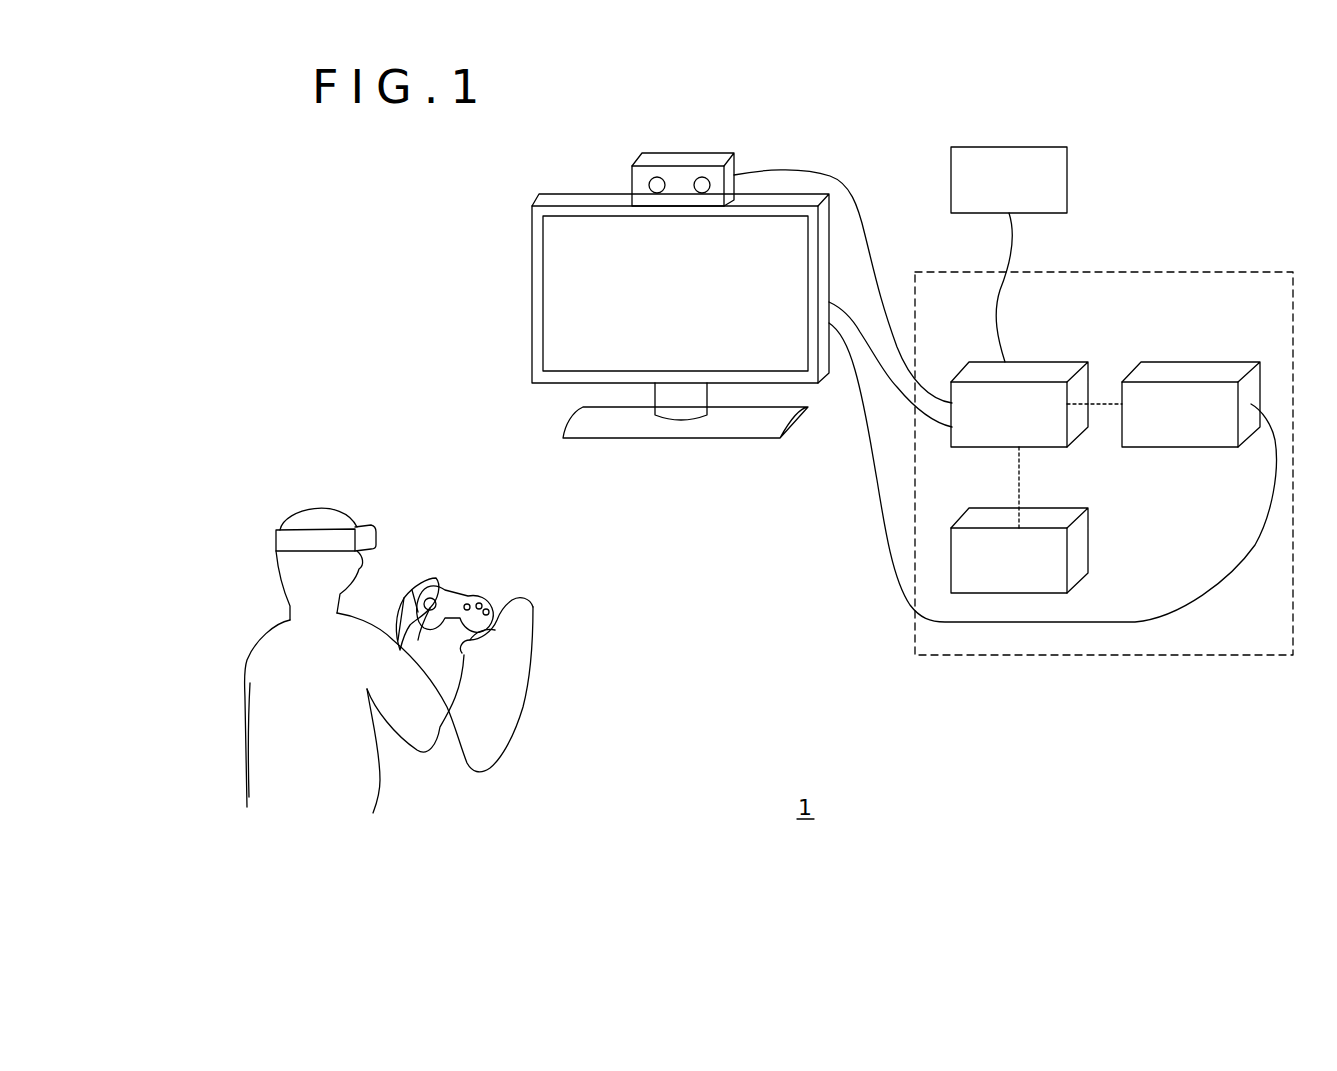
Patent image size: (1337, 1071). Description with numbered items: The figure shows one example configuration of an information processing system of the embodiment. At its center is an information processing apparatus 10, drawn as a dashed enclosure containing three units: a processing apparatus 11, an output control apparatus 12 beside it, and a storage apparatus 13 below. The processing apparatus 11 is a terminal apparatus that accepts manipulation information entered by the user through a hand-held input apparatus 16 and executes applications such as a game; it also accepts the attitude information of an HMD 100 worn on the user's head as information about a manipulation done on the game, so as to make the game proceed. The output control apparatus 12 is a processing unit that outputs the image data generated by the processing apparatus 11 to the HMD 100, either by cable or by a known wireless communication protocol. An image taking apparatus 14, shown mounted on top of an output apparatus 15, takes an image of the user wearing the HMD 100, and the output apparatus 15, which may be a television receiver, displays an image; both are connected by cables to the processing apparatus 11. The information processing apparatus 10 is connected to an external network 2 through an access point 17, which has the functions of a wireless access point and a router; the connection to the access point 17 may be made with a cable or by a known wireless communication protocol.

The external network 2 is at (1008, 147).
The information processing apparatus 10 is at (1178, 272).
The processing apparatus 11 is at (1053, 372).
The output control apparatus 12 is at (1226, 372).
The storage apparatus 13 is at (1053, 517).
The image taking apparatus 14 is at (688, 154).
The output apparatus 15 is at (532, 292).
The input apparatus 16 is at (457, 600).
The access point 17 is at (951, 178).
The HMD 100 is at (279, 538).